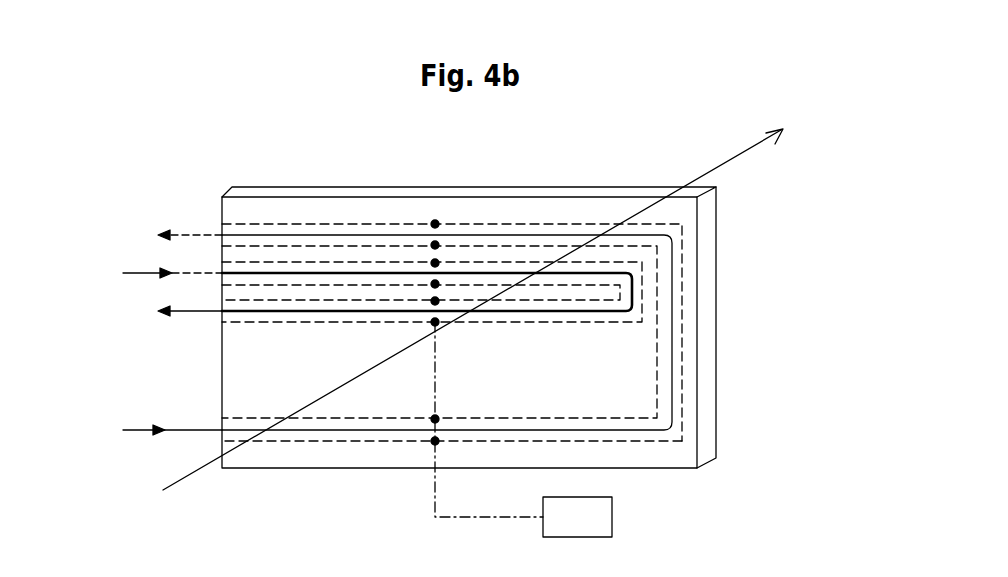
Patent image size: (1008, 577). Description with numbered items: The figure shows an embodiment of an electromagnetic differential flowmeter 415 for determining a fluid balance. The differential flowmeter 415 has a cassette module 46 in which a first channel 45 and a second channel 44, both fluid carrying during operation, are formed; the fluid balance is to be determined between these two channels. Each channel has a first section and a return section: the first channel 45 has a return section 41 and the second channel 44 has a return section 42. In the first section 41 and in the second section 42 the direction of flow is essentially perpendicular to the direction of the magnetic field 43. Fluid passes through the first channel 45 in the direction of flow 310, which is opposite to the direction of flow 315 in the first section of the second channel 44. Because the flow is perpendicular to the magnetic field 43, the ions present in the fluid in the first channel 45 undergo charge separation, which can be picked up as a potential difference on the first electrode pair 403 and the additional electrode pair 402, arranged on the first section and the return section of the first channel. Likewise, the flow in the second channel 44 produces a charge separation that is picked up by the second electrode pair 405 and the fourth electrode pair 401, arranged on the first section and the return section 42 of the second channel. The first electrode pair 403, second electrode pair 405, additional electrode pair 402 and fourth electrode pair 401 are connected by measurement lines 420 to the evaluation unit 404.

The return section 41 is at (270, 322).
The return section 42 is at (308, 443).
The magnetic field 43 is at (738, 158).
The second channel 44 is at (253, 221).
The first channel 45 is at (290, 260).
The cassette module 46 is at (716, 320).
The direction of flow 310 is at (200, 273).
The direction of flow 315 is at (192, 232).
The fourth electrode pair 401 is at (435, 419).
The additional electrode pair 402 is at (435, 301).
The first electrode pair 403 is at (435, 301).
The evaluation unit 404 is at (612, 516).
The second electrode pair 405 is at (435, 263).
The electromagnetic differential flowmeter 415 is at (622, 170).
The measurement lines 420 is at (468, 517).